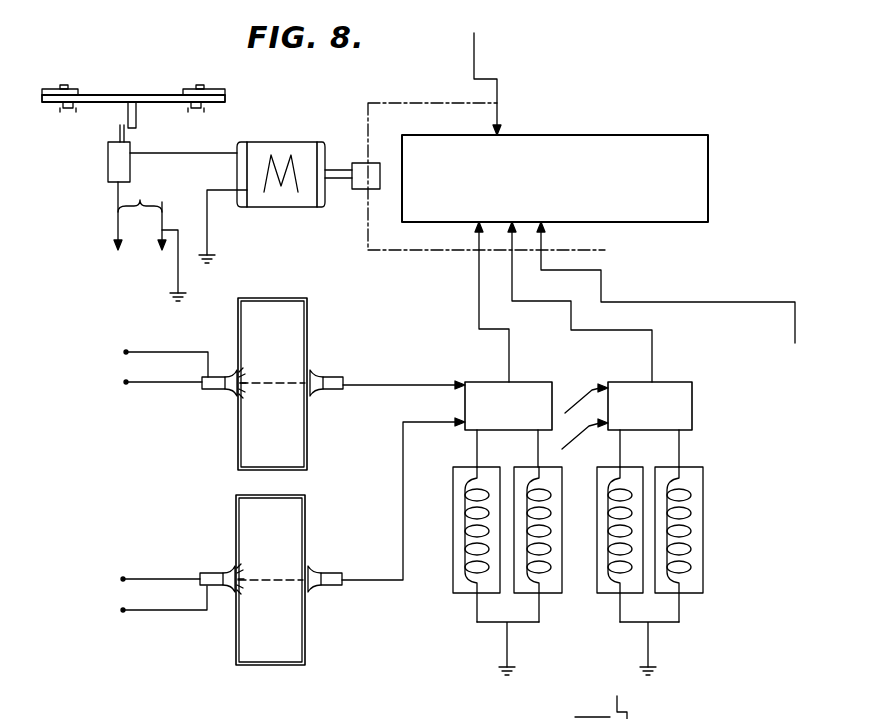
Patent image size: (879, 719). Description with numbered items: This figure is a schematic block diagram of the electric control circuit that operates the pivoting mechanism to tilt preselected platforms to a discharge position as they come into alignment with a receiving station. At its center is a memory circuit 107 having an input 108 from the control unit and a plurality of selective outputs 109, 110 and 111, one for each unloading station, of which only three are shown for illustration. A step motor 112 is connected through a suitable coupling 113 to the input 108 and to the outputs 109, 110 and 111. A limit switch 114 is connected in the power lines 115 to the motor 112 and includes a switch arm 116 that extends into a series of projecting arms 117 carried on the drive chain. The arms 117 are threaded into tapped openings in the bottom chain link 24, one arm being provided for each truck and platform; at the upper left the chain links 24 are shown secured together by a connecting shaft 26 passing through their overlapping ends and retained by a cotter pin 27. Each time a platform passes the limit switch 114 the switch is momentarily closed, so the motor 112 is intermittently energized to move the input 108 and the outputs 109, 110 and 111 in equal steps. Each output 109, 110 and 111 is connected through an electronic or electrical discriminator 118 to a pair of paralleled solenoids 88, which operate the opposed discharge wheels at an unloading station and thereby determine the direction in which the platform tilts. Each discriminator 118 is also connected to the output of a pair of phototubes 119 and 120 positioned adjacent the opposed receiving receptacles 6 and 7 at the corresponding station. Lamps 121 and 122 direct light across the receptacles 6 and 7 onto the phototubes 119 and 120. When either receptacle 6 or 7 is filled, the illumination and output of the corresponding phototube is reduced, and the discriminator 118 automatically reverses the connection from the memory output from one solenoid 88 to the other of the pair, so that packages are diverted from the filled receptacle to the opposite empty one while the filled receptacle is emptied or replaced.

The receiving receptacle 6 is at (307, 437).
The receiving receptacle 7 is at (305, 525).
The chain link 24 is at (78, 92).
The connecting shaft 26 is at (63, 110).
The cotter pin 27 is at (74, 106).
The solenoid 88 is at (465, 593).
The memory circuit 107 is at (661, 222).
The input 108 is at (499, 118).
The output 109 is at (479, 284).
The output 110 is at (512, 284).
The output 111 is at (541, 243).
The step motor 112 is at (277, 142).
The coupling 113 is at (358, 190).
The limit switch 114 is at (108, 163).
The power lines 115 is at (150, 241).
The switch arm 116 is at (120, 133).
The projecting arm 117 is at (136, 123).
The discriminator 118 is at (522, 382).
The phototube 119 is at (330, 377).
The phototube 120 is at (330, 573).
The lamp 121 is at (214, 390).
The lamp 122 is at (217, 572).